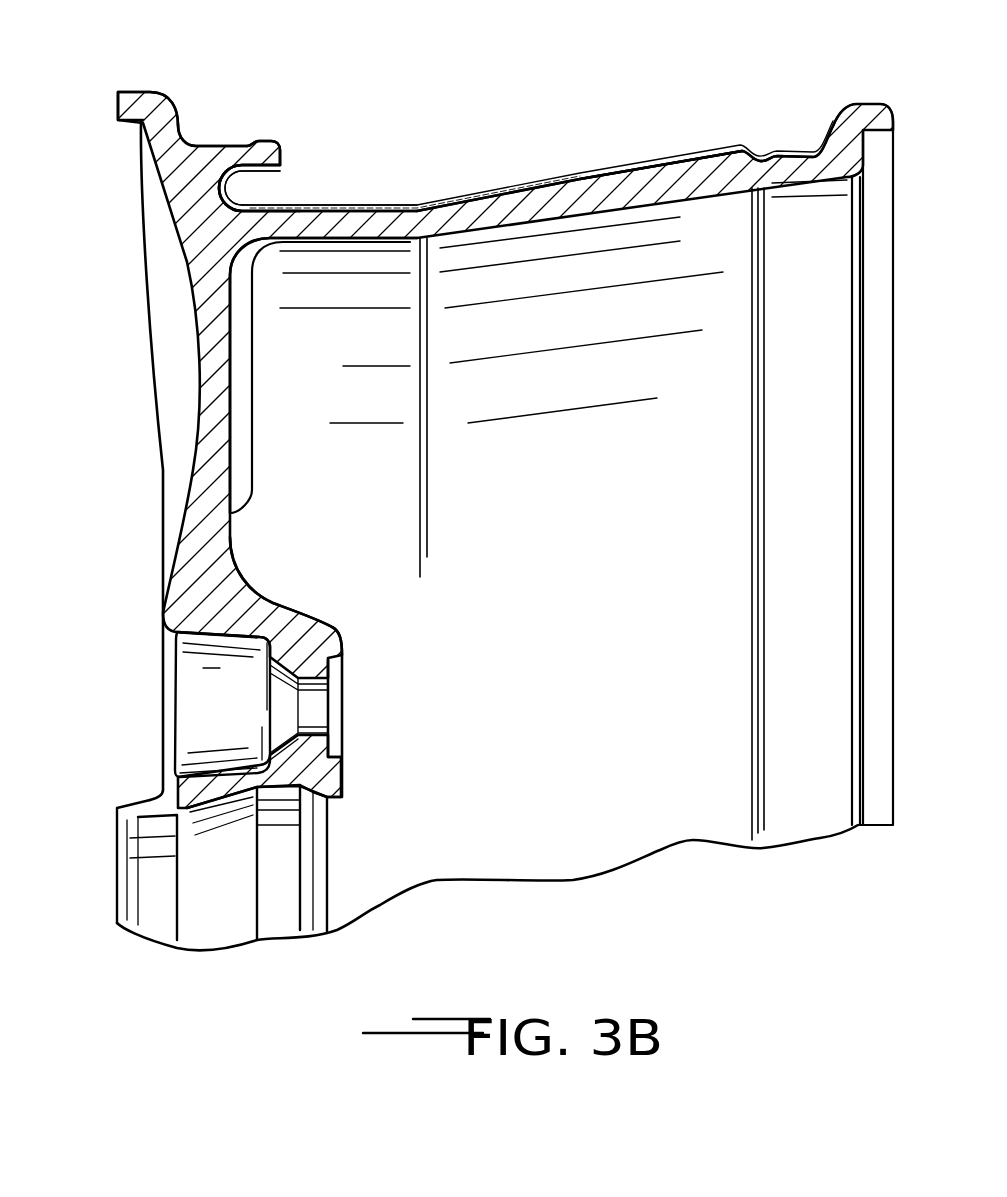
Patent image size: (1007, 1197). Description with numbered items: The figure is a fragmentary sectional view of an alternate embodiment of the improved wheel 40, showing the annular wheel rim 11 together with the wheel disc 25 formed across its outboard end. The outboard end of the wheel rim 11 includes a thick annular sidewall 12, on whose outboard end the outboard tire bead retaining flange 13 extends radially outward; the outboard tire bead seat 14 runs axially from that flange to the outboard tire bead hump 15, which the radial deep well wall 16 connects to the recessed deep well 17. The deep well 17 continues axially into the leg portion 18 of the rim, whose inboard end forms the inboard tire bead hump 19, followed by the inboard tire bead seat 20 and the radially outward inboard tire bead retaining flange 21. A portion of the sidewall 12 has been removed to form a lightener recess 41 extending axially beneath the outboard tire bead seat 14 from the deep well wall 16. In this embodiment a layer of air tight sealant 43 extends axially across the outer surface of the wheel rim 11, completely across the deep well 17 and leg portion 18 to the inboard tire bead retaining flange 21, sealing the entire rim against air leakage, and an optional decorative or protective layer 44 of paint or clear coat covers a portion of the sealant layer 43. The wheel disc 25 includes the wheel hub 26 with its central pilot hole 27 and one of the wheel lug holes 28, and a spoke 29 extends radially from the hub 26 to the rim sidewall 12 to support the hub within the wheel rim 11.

The wheel rim 11 is at (496, 181).
The sidewall 12 is at (172, 173).
The outboard tire bead retaining flange 13 is at (157, 103).
The outboard tire bead seat 14 is at (207, 143).
The outboard tire bead hump 15 is at (260, 140).
The deep well wall 16 is at (287, 162).
The deep well 17 is at (408, 222).
The leg portion 18 is at (562, 180).
The inboard tire bead hump 19 is at (743, 137).
The inboard tire bead seat 20 is at (788, 140).
The inboard tire bead retaining flange 21 is at (847, 120).
The wheel disc 25 is at (145, 549).
The wheel hub 26 is at (247, 603).
The central pilot hole 27 is at (355, 853).
The wheel lug hole 28 is at (357, 691).
The spoke 29 is at (223, 365).
The improved wheel 40 is at (448, 92).
The lightener recess 41 is at (306, 196).
The sealant layer 43 is at (220, 187).
The decorative/protective layer 44 is at (345, 210).